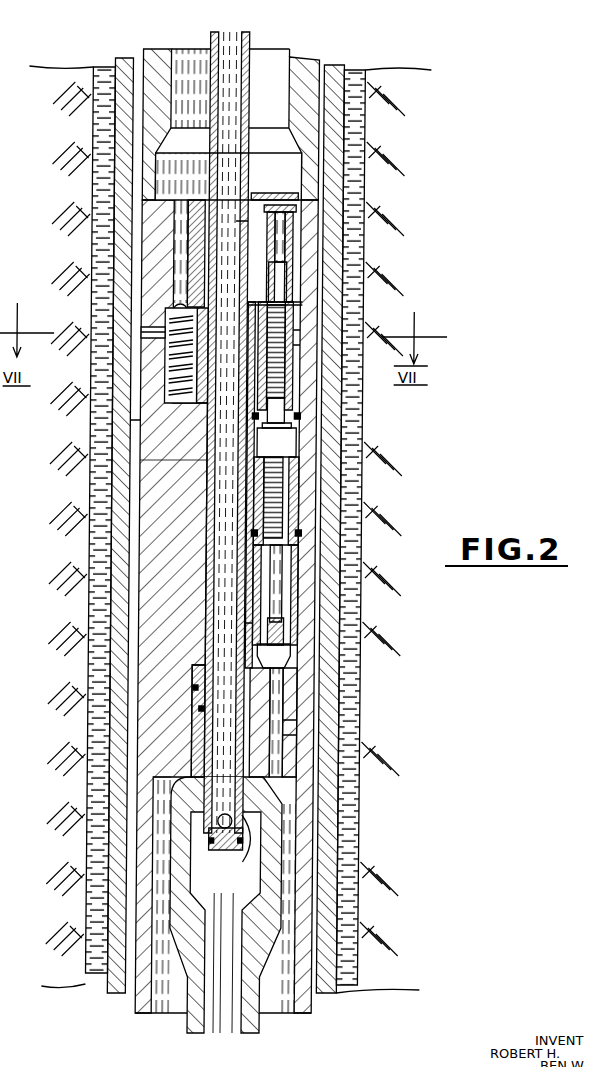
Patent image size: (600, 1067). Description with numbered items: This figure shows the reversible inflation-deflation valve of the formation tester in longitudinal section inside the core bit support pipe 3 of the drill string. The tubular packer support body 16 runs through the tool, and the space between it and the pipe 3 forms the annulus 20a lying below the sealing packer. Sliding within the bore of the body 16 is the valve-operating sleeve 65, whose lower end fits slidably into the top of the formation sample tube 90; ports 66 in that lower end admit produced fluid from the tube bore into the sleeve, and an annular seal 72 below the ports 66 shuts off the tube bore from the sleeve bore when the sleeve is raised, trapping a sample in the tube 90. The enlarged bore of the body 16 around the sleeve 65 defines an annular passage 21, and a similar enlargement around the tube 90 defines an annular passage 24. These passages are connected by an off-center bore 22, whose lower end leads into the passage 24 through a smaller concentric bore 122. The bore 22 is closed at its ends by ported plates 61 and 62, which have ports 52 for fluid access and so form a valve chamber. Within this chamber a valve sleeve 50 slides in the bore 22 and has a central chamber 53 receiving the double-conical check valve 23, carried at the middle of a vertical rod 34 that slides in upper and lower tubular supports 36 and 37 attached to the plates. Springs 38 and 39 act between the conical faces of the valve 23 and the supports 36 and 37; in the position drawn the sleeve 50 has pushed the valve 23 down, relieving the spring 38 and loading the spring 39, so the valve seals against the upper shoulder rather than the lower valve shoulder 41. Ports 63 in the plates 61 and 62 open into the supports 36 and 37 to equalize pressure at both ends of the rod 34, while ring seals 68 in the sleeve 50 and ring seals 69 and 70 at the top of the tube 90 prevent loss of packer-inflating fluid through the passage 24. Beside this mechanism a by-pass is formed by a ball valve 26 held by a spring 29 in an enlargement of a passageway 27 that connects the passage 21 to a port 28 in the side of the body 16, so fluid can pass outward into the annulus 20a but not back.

The core bit support pipe 3 is at (332, 77).
The packer support body 16 is at (302, 62).
The annulus 20a is at (142, 428).
The annular passage 21 is at (262, 78).
The off-center bore 22 is at (288, 262).
The check valve 23 is at (279, 440).
The annular passage 24 is at (292, 828).
The ball valve 26 is at (176, 311).
The passageway 27 is at (183, 240).
The port 28 is at (145, 338).
The spring 29 is at (172, 385).
The vertical rod 34 is at (279, 282).
The upper tubular support 36 is at (296, 233).
The lower tubular support 37 is at (288, 600).
The upper spring 38 is at (284, 327).
The lower spring 39 is at (305, 528).
The lower valve shoulder 41 is at (248, 460).
The valve sleeve 50 is at (303, 345).
The ports 52 is at (238, 221).
The central chamber 53 is at (287, 520).
The upper ported plate 61 is at (298, 212).
The lower ported plate 62 is at (303, 645).
The ports 63 is at (277, 198).
The valve-operating sleeve 65 is at (228, 47).
The ports 66 is at (257, 850).
The ring seals 68 is at (304, 416).
The ring seal 69 is at (201, 687).
The ring seal 70 is at (208, 708).
The annular seal 72 is at (216, 837).
The formation sample tube 90 is at (255, 753).
The smaller off-center bore 122 is at (281, 728).